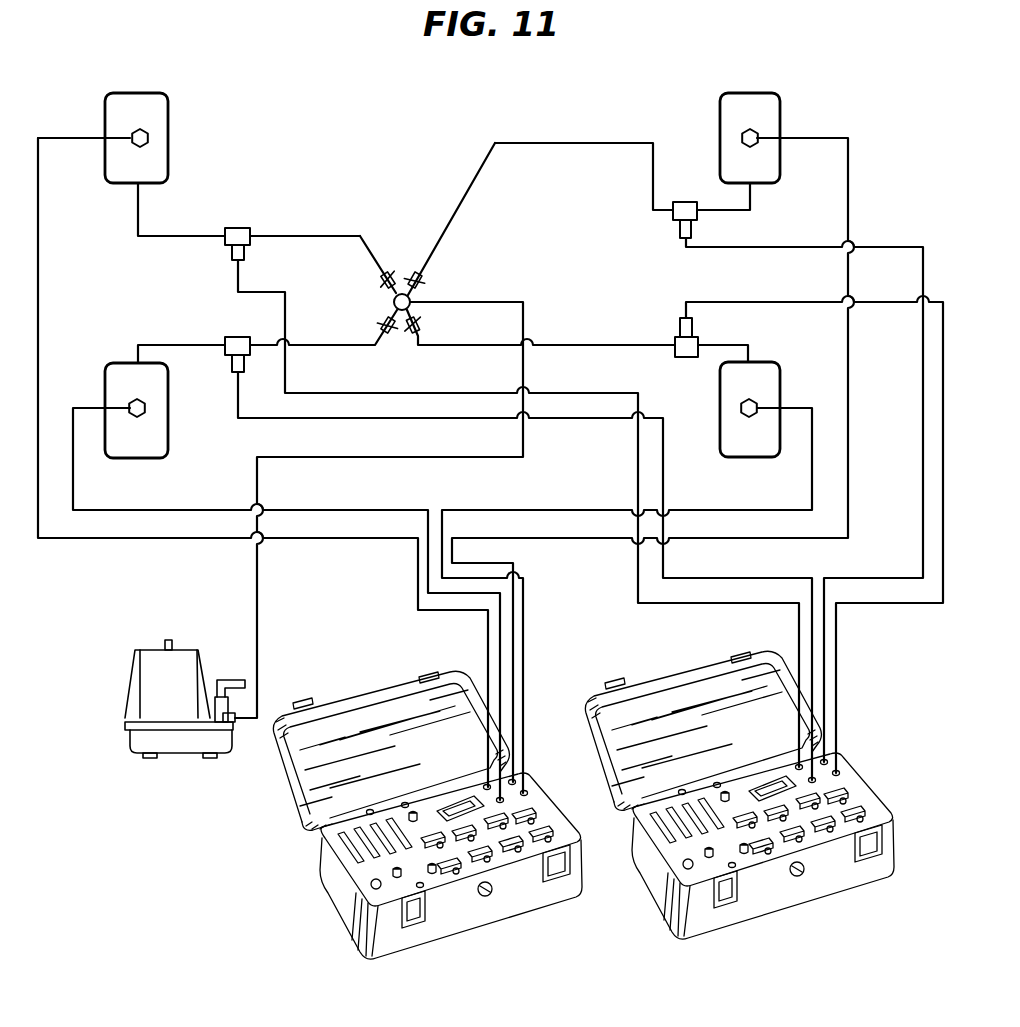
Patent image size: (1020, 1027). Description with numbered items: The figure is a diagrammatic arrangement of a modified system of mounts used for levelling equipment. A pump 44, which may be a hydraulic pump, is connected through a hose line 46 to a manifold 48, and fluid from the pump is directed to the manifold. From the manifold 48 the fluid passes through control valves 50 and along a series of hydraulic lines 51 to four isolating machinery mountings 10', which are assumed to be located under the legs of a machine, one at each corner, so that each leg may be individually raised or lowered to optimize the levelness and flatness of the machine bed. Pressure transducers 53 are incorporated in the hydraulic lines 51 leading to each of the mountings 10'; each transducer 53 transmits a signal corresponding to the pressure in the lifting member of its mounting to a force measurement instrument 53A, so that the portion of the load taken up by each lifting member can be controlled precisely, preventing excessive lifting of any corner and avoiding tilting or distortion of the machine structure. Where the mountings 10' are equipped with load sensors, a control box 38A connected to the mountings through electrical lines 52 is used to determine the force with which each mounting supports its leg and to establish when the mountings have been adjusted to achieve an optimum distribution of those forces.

The isolating machinery mounting 10' is at (468, 275).
The control box 38A is at (500, 917).
The pump 44 is at (192, 757).
The hose line 46 is at (526, 445).
The manifold 48 is at (411, 298).
The control valve 50 is at (390, 270).
The hydraulic line 51 is at (298, 236).
The electrical line 52 is at (73, 490).
The pressure transducer 53 is at (240, 228).
The force measurement instrument 53A is at (805, 897).